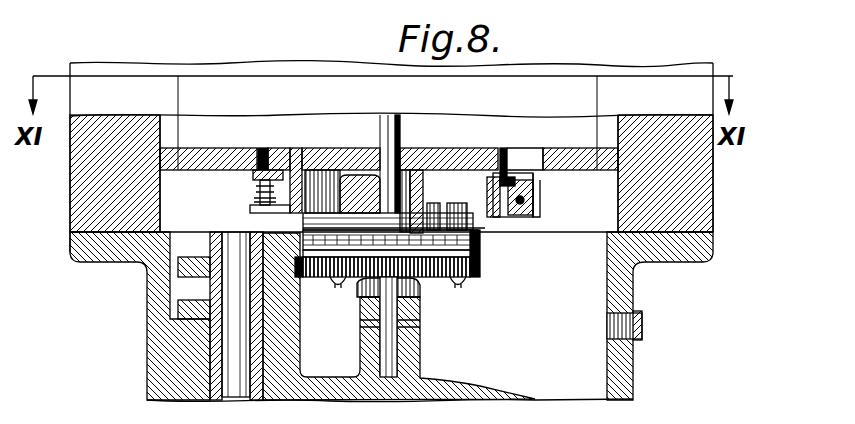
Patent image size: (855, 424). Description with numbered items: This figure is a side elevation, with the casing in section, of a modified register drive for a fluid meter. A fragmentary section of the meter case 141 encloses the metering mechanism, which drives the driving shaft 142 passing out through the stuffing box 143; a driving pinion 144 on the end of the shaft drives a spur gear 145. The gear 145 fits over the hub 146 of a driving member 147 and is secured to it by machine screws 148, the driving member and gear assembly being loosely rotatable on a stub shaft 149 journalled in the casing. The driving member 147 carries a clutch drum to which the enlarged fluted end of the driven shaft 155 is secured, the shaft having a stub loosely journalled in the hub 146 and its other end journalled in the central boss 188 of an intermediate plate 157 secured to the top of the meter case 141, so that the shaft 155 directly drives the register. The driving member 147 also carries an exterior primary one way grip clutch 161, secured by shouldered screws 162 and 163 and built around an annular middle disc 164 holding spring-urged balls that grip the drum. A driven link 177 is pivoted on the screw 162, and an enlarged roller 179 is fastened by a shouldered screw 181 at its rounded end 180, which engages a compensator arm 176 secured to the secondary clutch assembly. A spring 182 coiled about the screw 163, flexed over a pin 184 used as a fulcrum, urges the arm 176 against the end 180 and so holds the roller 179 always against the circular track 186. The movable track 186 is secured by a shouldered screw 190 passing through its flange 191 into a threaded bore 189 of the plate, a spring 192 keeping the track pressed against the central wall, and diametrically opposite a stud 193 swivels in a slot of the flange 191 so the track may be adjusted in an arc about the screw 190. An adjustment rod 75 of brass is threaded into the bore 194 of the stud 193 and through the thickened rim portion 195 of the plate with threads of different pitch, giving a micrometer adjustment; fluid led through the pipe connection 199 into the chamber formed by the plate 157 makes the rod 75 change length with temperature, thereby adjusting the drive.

The adjustment rod 75 is at (515, 190).
The meter case 141 is at (158, 357).
The driving shaft 142 is at (238, 360).
The stuffing box 143 is at (216, 340).
The driving pinion 144 is at (180, 270).
The spur gear 145 is at (484, 266).
The hub 146 is at (418, 298).
The driving member 147 is at (480, 252).
The machine screws 148 is at (462, 284).
The stub shaft 149 is at (392, 343).
The driven shaft 155 is at (398, 120).
The intermediate plate 157 is at (222, 135).
The primary one way grip clutch 161 is at (482, 230).
The shouldered screw 162 is at (294, 170).
The shouldered screw 163 is at (503, 173).
The annular middle disc 164 is at (480, 236).
The compensator arm 176 is at (415, 185).
The driven link 177 is at (300, 222).
The roller 179 is at (403, 173).
The rounded end 180 is at (417, 282).
The shouldered screw 181 is at (368, 148).
The spring 182 is at (420, 208).
The pin 184 is at (497, 222).
The circular track 186 is at (257, 192).
The central boss 188 is at (433, 208).
The threaded bore 189 is at (262, 150).
The shouldered screw 190 is at (248, 210).
The flange 191 is at (253, 174).
The spring 192 is at (252, 200).
The stud 193 is at (524, 202).
The threaded bore 194 is at (533, 185).
The thickened rim portion 195 is at (702, 165).
The pipe connection 199 is at (643, 320).